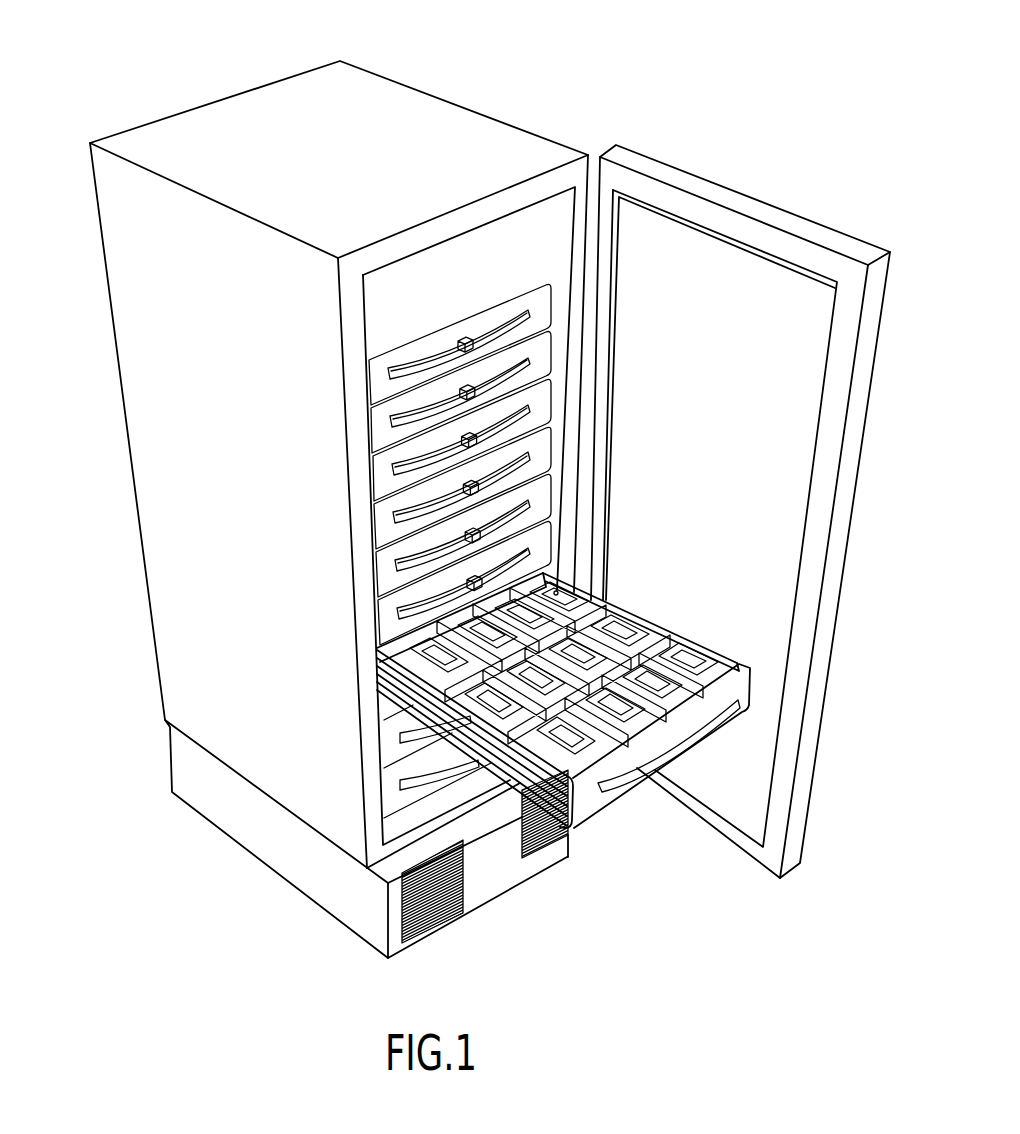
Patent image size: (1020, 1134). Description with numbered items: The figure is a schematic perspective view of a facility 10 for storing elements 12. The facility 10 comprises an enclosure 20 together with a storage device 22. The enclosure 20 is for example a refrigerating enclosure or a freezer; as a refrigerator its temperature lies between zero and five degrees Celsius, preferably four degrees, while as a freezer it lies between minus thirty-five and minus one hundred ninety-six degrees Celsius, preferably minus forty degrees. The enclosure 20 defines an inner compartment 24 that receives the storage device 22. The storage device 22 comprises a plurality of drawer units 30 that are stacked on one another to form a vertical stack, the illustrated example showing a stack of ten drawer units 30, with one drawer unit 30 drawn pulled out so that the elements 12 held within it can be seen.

The facility 10 is at (550, 70).
The elements 12 is at (692, 686).
The enclosure 20 is at (160, 404).
The storage device 22 is at (352, 541).
The inner compartment 24 is at (440, 799).
The drawer units 30 is at (745, 682).